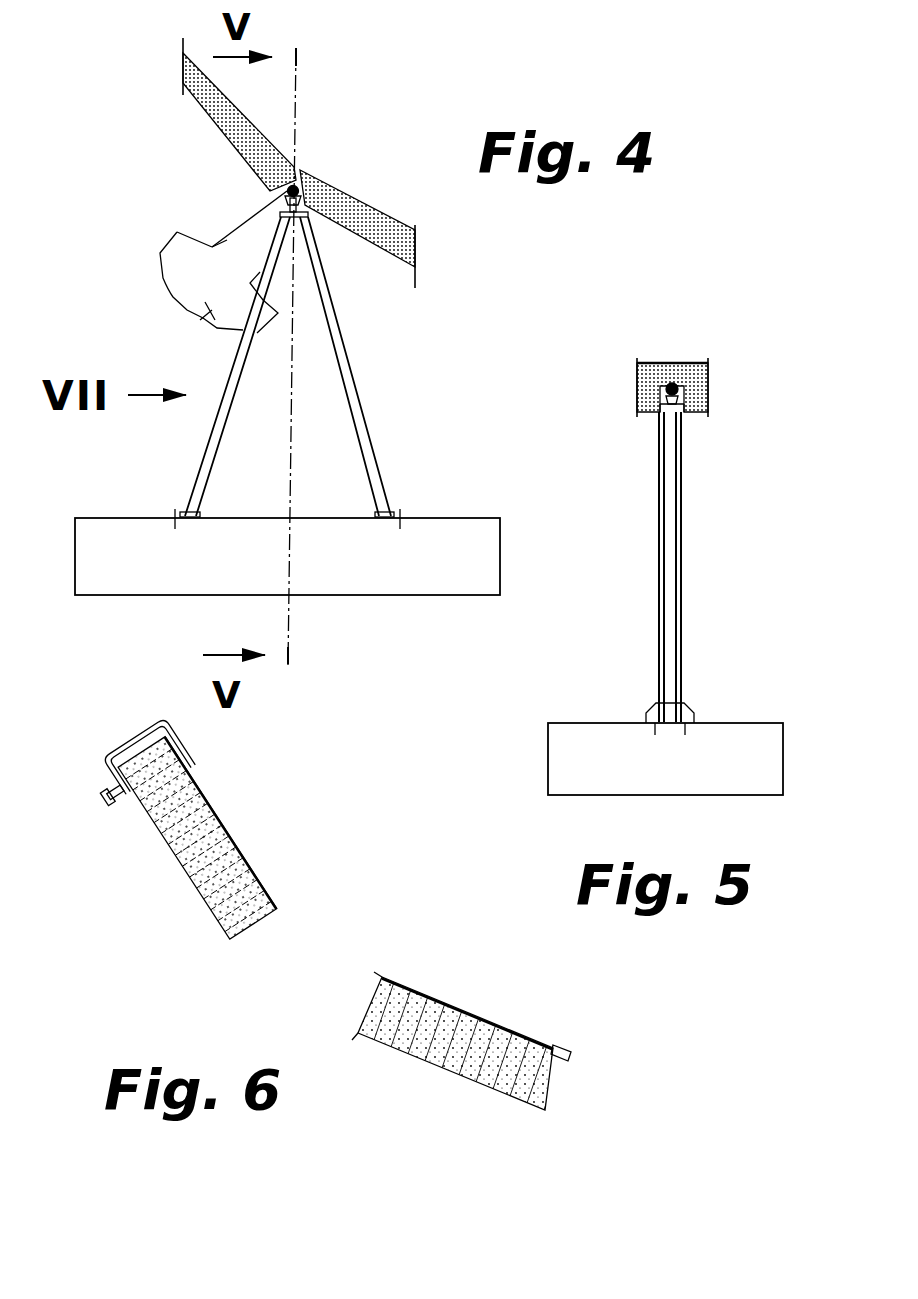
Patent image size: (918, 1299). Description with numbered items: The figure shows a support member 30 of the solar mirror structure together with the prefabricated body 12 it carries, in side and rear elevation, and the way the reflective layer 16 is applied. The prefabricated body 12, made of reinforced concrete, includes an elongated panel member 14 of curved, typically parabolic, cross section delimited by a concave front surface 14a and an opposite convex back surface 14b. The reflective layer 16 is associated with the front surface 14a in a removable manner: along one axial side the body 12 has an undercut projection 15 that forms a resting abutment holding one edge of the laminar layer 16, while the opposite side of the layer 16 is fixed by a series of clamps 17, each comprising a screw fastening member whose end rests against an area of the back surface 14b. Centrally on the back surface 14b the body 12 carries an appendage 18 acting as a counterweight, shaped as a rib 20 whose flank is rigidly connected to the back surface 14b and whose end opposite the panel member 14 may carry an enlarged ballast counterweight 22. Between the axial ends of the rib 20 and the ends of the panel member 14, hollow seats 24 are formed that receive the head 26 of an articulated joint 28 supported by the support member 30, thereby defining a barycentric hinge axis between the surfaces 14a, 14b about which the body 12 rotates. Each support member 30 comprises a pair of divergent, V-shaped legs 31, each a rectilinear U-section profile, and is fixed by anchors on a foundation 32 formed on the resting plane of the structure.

In FIG. 4, the prefabricated body 12 is at (418, 88).
In FIG. 5, the prefabricated body 12 is at (778, 270).
In FIG. 6, the prefabricated body 12 is at (330, 880).
In FIG. 4, the panel member 14 is at (364, 202).
In FIG. 5, the panel member 14 is at (693, 357).
In FIG. 6, the panel member 14 is at (418, 1068).
In FIG. 4, the front surface 14a is at (392, 229).
In FIG. 5, the front surface 14a is at (648, 362).
In FIG. 6, the front surface 14a is at (235, 850).
In FIG. 4, the back surface 14b is at (207, 115).
In FIG. 5, the back surface 14b is at (697, 413).
In FIG. 6, the back surface 14b is at (197, 895).
In FIG. 6, the projection 15 is at (567, 1050).
In FIG. 5, the reflective layer 16 is at (670, 362).
In FIG. 6, the reflective layer 16 is at (418, 1000).
In FIG. 6, the clamp 17 is at (133, 743).
In FIG. 4, the appendage 18 is at (160, 279).
In FIG. 4, the rib 20 is at (177, 232).
In FIG. 4, the ballast counterweight 22 is at (212, 310).
In FIG. 4, the hollow seat 24 is at (303, 216).
In FIG. 5, the hollow seat 24 is at (685, 403).
In FIG. 4, the head 26 is at (310, 174).
In FIG. 4, the articulated joint 28 is at (282, 202).
In FIG. 5, the articulated joint 28 is at (659, 409).
In FIG. 4, the support member 30 is at (372, 437).
In FIG. 5, the support member 30 is at (684, 632).
In FIG. 4, the leg 31 is at (207, 448).
In FIG. 5, the leg 31 is at (658, 535).
In FIG. 4, the foundation 32 is at (88, 548).
In FIG. 5, the foundation 32 is at (595, 745).